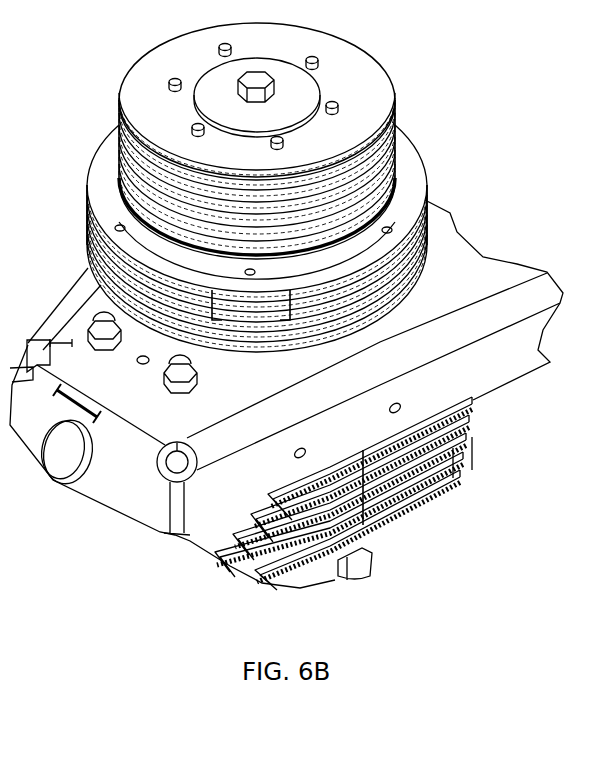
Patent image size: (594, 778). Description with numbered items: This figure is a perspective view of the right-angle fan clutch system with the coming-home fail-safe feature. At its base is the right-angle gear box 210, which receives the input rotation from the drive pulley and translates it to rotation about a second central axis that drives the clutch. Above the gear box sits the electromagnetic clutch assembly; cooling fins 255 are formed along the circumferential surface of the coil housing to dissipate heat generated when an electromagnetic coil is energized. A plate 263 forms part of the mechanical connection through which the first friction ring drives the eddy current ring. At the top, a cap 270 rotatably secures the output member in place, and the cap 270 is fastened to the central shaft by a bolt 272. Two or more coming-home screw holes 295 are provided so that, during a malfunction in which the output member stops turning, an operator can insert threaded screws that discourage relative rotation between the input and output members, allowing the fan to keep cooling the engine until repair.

The right-angle gear box 210 is at (377, 530).
The cooling fins 255 is at (85, 233).
The plate 263 is at (120, 102).
The cap 270 is at (300, 98).
The bolt 272 is at (257, 80).
The coming-home screw holes 295 is at (235, 316).